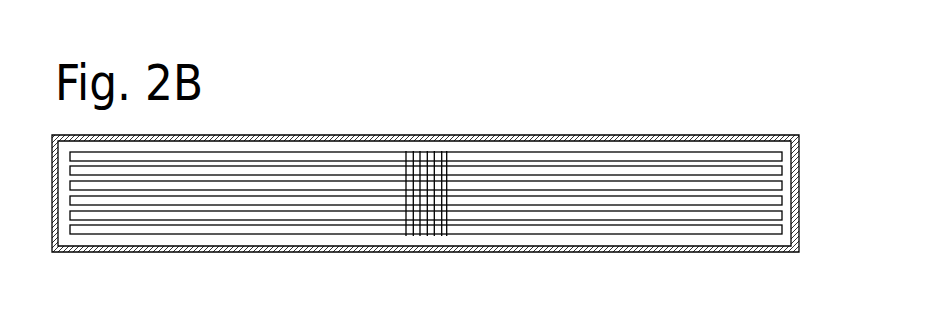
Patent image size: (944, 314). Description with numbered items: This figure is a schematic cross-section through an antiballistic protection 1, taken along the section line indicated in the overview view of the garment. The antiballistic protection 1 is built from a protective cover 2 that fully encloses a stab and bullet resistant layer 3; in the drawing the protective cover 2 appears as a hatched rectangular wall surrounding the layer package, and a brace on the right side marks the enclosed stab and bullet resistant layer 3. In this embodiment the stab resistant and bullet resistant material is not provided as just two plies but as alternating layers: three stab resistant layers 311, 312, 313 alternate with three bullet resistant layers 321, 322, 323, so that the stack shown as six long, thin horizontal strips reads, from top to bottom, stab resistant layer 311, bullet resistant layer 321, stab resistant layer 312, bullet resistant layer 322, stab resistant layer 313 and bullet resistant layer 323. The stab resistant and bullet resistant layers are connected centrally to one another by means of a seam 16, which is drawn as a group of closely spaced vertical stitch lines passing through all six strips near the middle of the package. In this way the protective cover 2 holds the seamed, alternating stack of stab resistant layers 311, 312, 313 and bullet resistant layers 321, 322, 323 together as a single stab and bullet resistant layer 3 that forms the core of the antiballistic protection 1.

The antiballistic protection 1 is at (457, 172).
The protective cover 2 is at (748, 138).
The stab and bullet resistant layer 3 is at (466, 227).
The seam 16 is at (452, 162).
The stab resistant layer 311 is at (485, 157).
The bullet resistant layer 321 is at (538, 170).
The stab resistant layer 312 is at (589, 185).
The bullet resistant layer 322 is at (640, 200).
The stab resistant layer 313 is at (687, 218).
The bullet resistant layer 323 is at (728, 230).